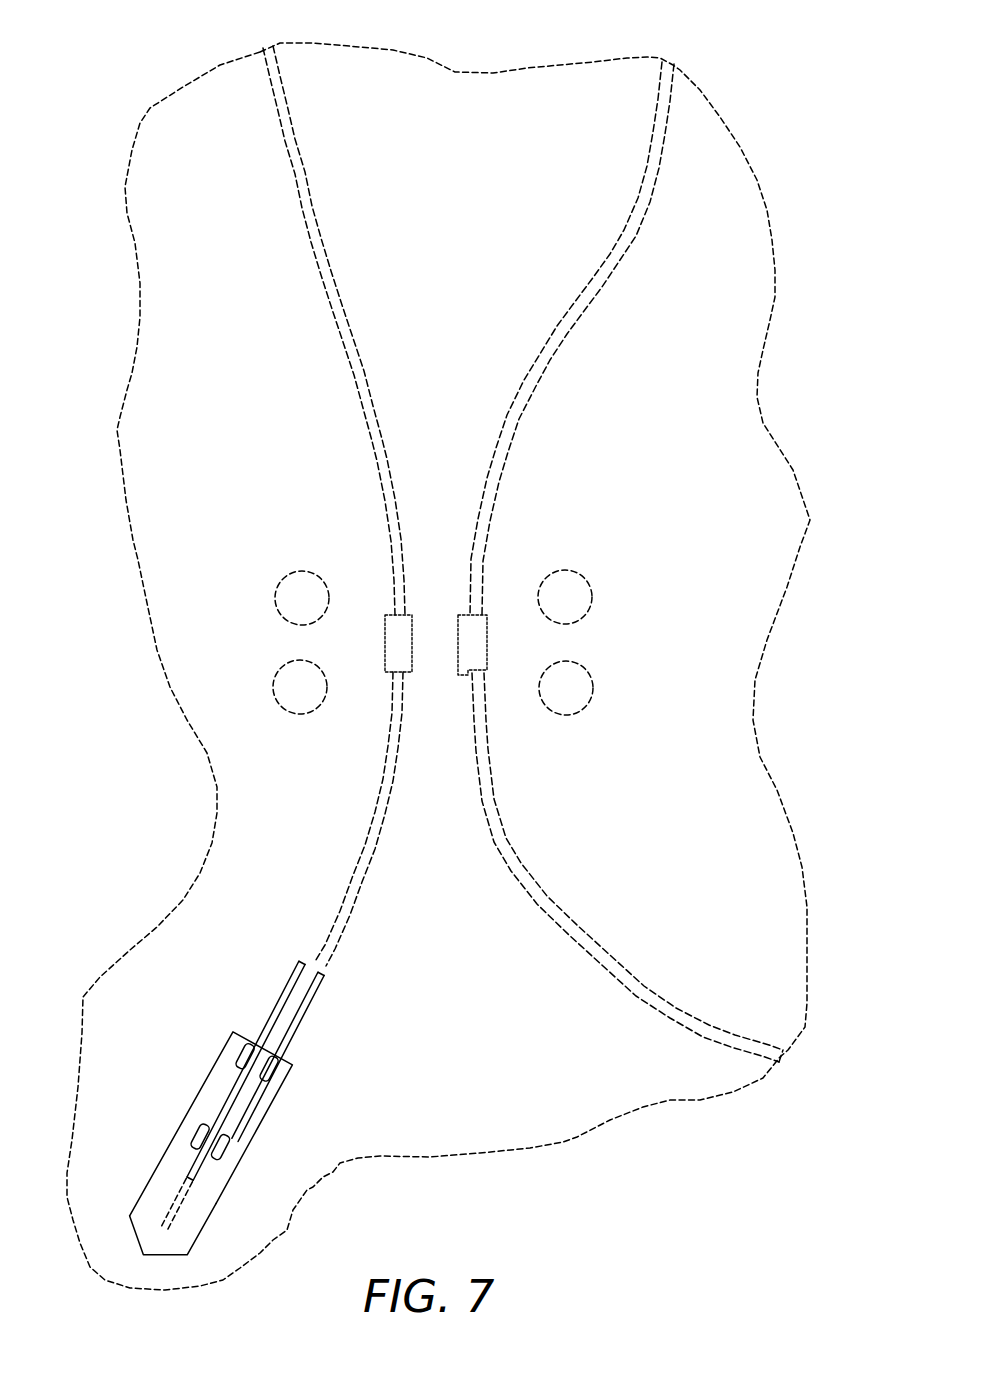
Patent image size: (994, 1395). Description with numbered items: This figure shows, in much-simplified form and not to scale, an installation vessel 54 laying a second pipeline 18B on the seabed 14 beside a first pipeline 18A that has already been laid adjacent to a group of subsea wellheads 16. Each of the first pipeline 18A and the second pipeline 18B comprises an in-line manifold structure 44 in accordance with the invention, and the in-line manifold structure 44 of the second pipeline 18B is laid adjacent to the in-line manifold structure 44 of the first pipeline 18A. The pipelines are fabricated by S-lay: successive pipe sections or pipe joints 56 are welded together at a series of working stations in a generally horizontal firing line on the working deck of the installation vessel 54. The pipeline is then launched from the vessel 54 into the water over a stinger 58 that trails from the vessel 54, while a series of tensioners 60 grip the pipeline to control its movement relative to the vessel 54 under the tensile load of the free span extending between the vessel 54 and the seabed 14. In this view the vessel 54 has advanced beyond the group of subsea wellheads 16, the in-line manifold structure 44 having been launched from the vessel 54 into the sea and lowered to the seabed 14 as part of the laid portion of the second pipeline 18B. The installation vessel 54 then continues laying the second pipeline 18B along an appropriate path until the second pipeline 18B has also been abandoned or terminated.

The seabed 14 is at (125, 388).
The subsea wellheads 16 is at (285, 615).
The first pipeline 18A is at (562, 325).
The second pipeline 18B is at (320, 250).
The in-line manifold structure 44 is at (385, 612).
The installation vessel 54 is at (212, 1092).
The pipe joints 56 is at (207, 1212).
The stinger 58 is at (280, 1002).
The tensioners 60 is at (285, 1062).